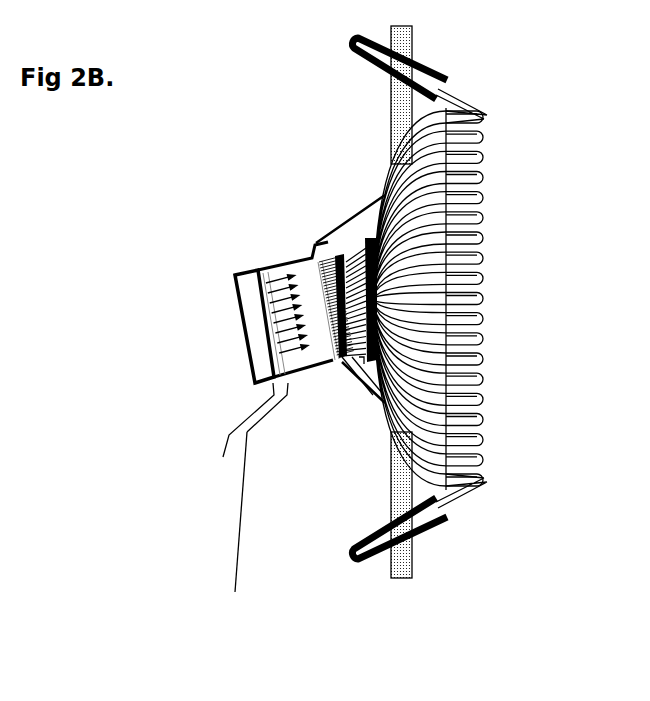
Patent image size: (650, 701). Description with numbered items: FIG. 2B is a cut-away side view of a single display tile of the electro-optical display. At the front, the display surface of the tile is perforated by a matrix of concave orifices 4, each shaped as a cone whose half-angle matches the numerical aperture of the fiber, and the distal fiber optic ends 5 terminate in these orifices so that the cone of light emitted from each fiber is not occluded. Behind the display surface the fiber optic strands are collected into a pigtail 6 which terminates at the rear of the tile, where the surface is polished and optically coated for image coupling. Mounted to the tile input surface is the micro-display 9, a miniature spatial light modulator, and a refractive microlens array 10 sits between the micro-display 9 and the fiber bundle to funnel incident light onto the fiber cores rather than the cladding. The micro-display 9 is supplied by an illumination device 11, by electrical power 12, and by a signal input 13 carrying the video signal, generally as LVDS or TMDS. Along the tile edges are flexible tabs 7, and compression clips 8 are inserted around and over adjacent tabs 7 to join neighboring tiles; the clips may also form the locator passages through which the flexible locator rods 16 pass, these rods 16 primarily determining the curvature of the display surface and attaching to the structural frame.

The concave orifices 4 is at (497, 123).
The distal fiber optic ends 5 is at (481, 197).
The pigtail 6 is at (352, 247).
The tabs 7 is at (461, 94).
The compression clips 8 is at (372, 582).
The micro-display 9 is at (269, 266).
The refractive microlens array 10 is at (334, 362).
The illumination device 11 is at (245, 271).
The electrical power 12 is at (219, 446).
The signal input 13 is at (233, 561).
The locator rods 16 is at (385, 108).